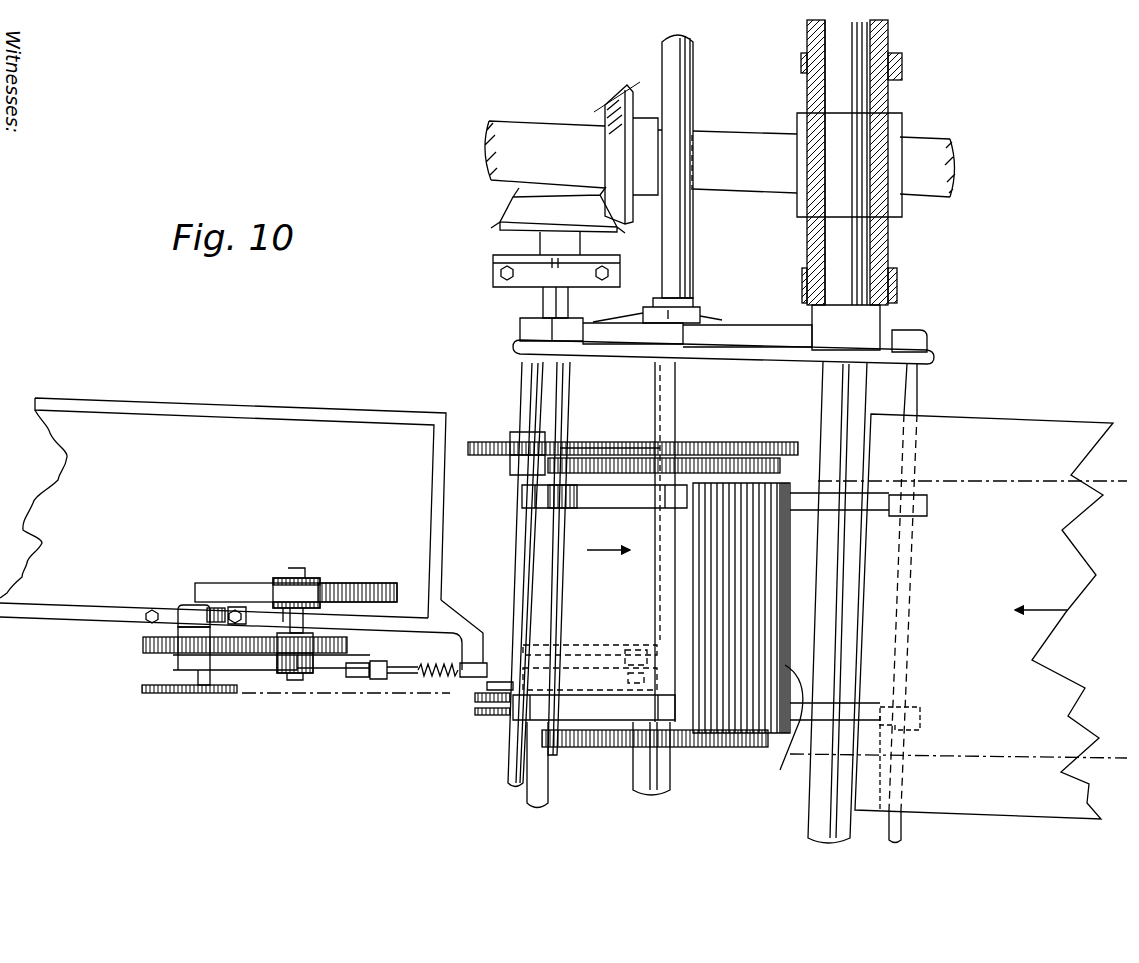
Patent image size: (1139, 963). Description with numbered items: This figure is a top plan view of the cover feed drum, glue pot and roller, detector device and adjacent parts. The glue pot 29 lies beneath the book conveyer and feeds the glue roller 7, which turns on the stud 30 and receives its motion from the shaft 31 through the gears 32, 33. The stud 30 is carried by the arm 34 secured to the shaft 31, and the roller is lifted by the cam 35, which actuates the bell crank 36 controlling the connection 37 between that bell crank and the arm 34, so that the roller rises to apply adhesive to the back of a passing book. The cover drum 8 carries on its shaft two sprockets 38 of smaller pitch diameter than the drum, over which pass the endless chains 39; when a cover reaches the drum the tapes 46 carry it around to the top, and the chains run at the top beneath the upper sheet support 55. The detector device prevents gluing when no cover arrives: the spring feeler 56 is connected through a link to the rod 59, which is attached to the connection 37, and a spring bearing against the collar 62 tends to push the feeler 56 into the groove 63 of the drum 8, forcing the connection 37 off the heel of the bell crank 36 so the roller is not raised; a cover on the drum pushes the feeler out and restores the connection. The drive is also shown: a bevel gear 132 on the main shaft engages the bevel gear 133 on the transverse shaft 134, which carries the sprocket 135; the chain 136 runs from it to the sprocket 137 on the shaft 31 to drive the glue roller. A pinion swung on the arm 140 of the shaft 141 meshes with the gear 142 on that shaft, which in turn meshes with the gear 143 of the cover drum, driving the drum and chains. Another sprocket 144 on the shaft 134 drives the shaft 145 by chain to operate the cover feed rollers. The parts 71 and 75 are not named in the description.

The glue roller 7 is at (232, 583).
The cover drum 8 is at (608, 567).
The glue pot 29 is at (231, 534).
The stud 30 is at (310, 590).
The shaft 31 is at (195, 605).
The gear 32 is at (330, 656).
The gear 33 is at (143, 645).
The arm 34 is at (262, 670).
The cam 35 is at (500, 687).
The bell crank 36 is at (405, 680).
The connection 37 is at (380, 672).
The sprockets 38 is at (715, 458).
The endless chains 39 is at (958, 608).
The tapes 46 is at (522, 497).
The upper sheet support 55 is at (984, 603).
The spring feeler 56 is at (580, 648).
The rod 59 is at (478, 693).
The collar 62 is at (420, 676).
The groove 63 is at (792, 740).
The sleeve 71 is at (845, 242).
The shaft 75 is at (720, 159).
The bevel gear 132 is at (613, 116).
The bevel gear 133 is at (558, 252).
The transverse shaft 134 is at (560, 297).
The sprocket 135 is at (490, 690).
The chain 136 is at (308, 693).
The sprocket 137 is at (168, 693).
The arm 140 is at (510, 464).
The shaft 141 is at (513, 363).
The gear 142 is at (492, 430).
The gear 143 is at (608, 442).
The sprocket 144 is at (487, 716).
The shaft 145 is at (675, 250).